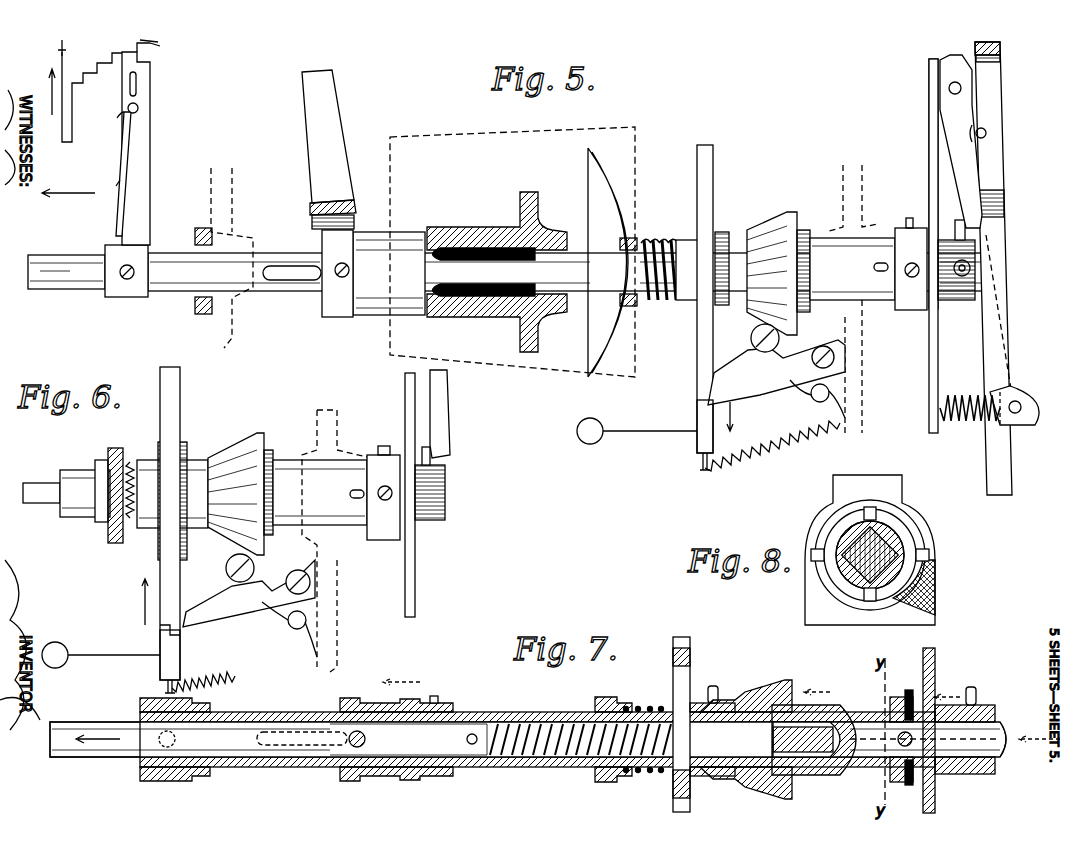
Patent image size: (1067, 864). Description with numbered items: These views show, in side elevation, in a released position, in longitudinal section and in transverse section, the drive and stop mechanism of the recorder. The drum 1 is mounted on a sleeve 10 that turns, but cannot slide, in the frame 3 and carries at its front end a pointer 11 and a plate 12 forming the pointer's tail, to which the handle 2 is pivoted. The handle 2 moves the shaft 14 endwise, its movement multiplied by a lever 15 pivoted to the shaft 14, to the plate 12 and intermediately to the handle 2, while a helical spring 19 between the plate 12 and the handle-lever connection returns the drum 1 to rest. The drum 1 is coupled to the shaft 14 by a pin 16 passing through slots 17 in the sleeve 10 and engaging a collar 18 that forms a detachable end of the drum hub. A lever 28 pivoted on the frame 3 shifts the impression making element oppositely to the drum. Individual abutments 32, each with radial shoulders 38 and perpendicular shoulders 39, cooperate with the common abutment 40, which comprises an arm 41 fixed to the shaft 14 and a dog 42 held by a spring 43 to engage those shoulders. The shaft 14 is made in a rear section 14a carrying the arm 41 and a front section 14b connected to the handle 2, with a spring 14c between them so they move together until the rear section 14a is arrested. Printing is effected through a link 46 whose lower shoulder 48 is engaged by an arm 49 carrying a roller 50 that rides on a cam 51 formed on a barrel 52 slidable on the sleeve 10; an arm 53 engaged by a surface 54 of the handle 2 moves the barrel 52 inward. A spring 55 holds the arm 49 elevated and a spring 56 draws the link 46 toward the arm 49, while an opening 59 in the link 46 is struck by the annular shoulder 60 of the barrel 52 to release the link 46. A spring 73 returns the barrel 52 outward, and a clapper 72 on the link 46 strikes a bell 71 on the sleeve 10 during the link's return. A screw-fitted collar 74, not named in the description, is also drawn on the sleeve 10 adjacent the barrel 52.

In FIG. 5, the drum 1 is at (606, 127).
In FIG. 5, the handle 2 is at (1012, 312).
In FIG. 5, the frame 3 is at (230, 172).
In FIG. 5, the sleeve 10 is at (268, 253).
In FIG. 8, the sleeve 10 is at (838, 562).
In FIG. 7, the sleeve 10 is at (274, 767).
In FIG. 5, the pointer 11 is at (929, 140).
In FIG. 5, the plate 12 is at (936, 436).
In FIG. 6, the plate 12 is at (416, 606).
In FIG. 8, the plate 12 is at (924, 574).
In FIG. 7, the plate 12 is at (936, 650).
In FIG. 8, the shaft 14 is at (850, 585).
In FIG. 7, the shaft 14 is at (280, 722).
In FIG. 5, the rear shaft section 14a is at (45, 300).
In FIG. 7, the rear shaft section 14a is at (62, 760).
In FIG. 7, the front shaft section 14b is at (1002, 760).
In FIG. 7, the spring 14c is at (556, 722).
In FIG. 5, the lever 15 is at (1026, 392).
In FIG. 5, the pin 16 is at (341, 305).
In FIG. 7, the pin 16 is at (360, 748).
In FIG. 5, the slots 17 is at (292, 282).
In FIG. 7, the slots 17 is at (318, 748).
In FIG. 5, the collar 18 is at (360, 316).
In FIG. 7, the collar 18 is at (347, 780).
In FIG. 5, the helical spring 19 is at (958, 393).
In FIG. 5, the lever 28 is at (338, 94).
In FIG. 5, the individual abutments 32 is at (58, 52).
In FIG. 5, the shoulders 38 is at (160, 46).
In FIG. 5, the shoulders 39 is at (101, 74).
In FIG. 5, the common abutment 40 is at (158, 142).
In FIG. 7, the common abutment 40 is at (172, 770).
In FIG. 5, the arm 41 is at (140, 168).
In FIG. 5, the dog 42 is at (136, 84).
In FIG. 5, the spring 43 is at (119, 166).
In FIG. 5, the link 46 is at (714, 165).
In FIG. 6, the link 46 is at (181, 393).
In FIG. 7, the link 46 is at (690, 644).
In FIG. 5, the shoulder 48 is at (697, 410).
In FIG. 6, the shoulder 48 is at (180, 645).
In FIG. 5, the arm 49 is at (758, 400).
In FIG. 6, the arm 49 is at (224, 628).
In FIG. 5, the roller 50 is at (755, 340).
In FIG. 6, the roller 50 is at (225, 568).
In FIG. 5, the cam 51 is at (772, 213).
In FIG. 6, the cam 51 is at (240, 494).
In FIG. 7, the cam 51 is at (768, 682).
In FIG. 5, the barrel 52 is at (852, 269).
In FIG. 8, the barrel 52 is at (840, 535).
In FIG. 7, the barrel 52 is at (832, 705).
In FIG. 5, the arm 53 is at (962, 160).
In FIG. 6, the arm 53 is at (448, 392).
In FIG. 5, the surface 54 is at (987, 133).
In FIG. 5, the spring 55 is at (826, 402).
In FIG. 6, the spring 55 is at (306, 632).
In FIG. 5, the spring 56 is at (776, 455).
In FIG. 6, the spring 56 is at (217, 681).
In FIG. 7, the opening 59 is at (690, 666).
In FIG. 5, the annular shoulder 60 is at (724, 232).
In FIG. 6, the annular shoulder 60 is at (186, 458).
In FIG. 7, the annular shoulder 60 is at (719, 692).
In FIG. 5, the bell 71 is at (628, 348).
In FIG. 7, the bell 71 is at (612, 696).
In FIG. 5, the clapper 72 is at (591, 444).
In FIG. 5, the spring 73 is at (651, 240).
In FIG. 7, the spring 73 is at (645, 775).
In FIG. 5, the collar with screw 74 is at (909, 226).
In FIG. 6, the collar with screw 74 is at (381, 452).
In FIG. 8, the collar with screw 74 is at (922, 542).
In FIG. 7, the collar with screw 74 is at (905, 695).